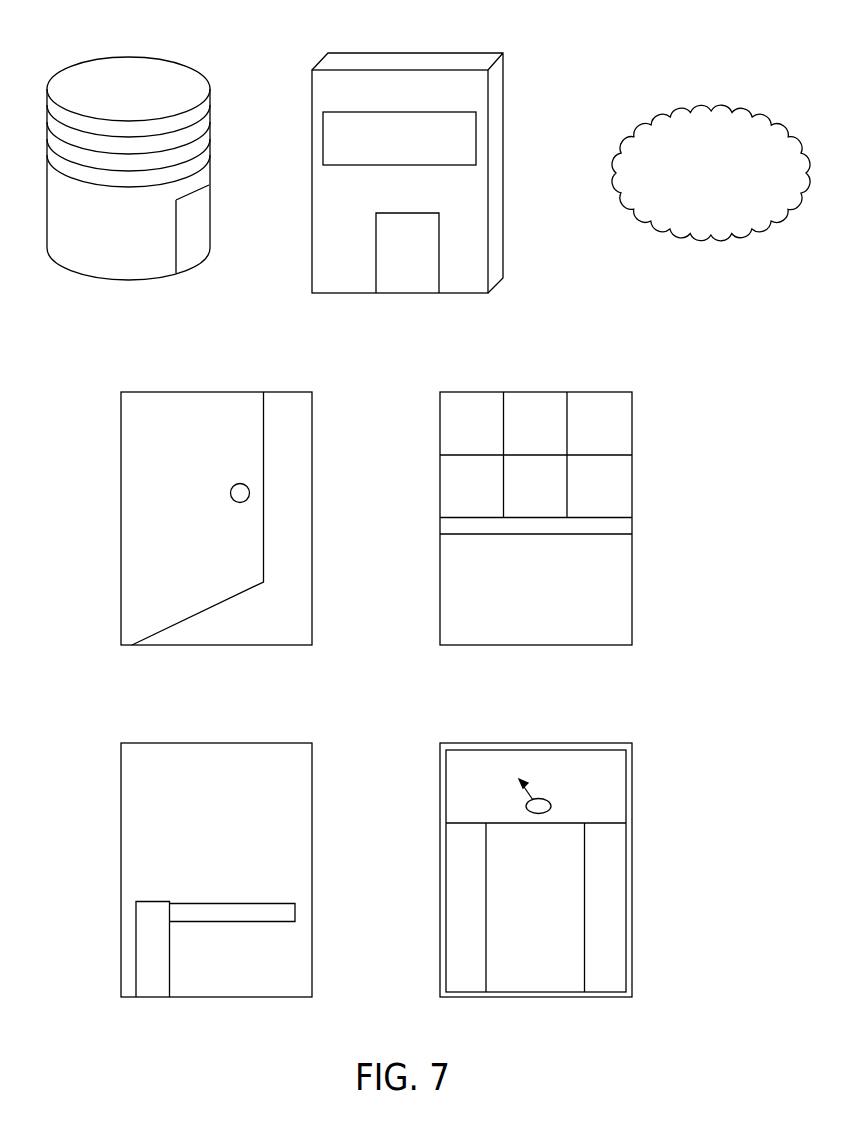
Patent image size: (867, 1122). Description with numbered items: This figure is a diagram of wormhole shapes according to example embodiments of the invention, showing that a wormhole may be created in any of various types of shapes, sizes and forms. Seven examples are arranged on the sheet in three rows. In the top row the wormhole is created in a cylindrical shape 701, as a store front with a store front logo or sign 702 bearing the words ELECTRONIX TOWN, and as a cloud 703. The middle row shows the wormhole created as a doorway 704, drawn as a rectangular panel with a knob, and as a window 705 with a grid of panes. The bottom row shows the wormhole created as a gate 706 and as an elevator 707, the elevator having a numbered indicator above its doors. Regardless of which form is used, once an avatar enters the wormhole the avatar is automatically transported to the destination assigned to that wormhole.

The cylindrical shape 701 is at (128, 57).
The store front with store front logo or sign 702 is at (364, 53).
The cloud 703 is at (694, 109).
The doorway 704 is at (190, 392).
The window 705 is at (490, 392).
The gate 706 is at (190, 743).
The elevator 707 is at (530, 743).